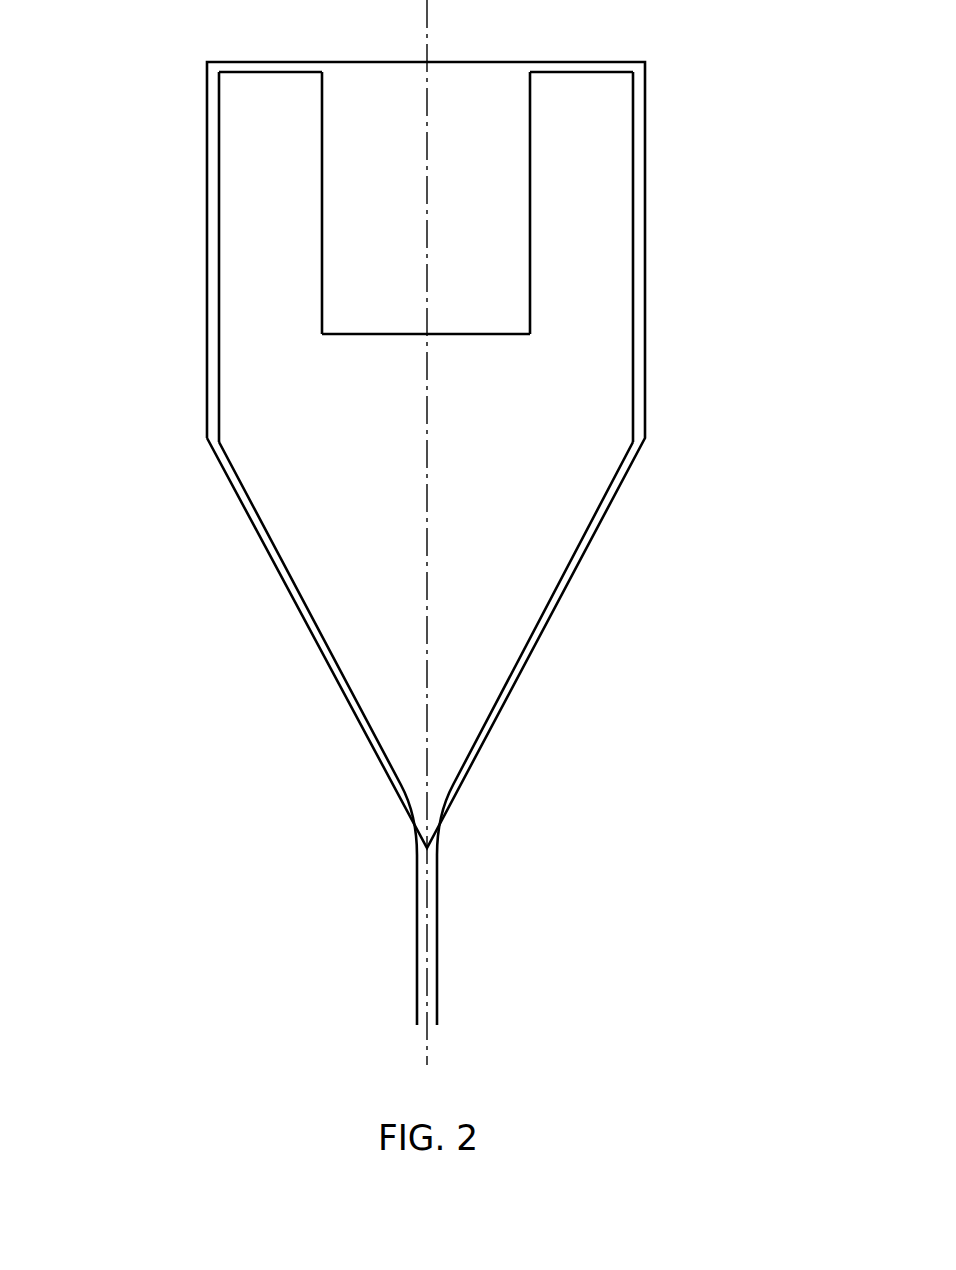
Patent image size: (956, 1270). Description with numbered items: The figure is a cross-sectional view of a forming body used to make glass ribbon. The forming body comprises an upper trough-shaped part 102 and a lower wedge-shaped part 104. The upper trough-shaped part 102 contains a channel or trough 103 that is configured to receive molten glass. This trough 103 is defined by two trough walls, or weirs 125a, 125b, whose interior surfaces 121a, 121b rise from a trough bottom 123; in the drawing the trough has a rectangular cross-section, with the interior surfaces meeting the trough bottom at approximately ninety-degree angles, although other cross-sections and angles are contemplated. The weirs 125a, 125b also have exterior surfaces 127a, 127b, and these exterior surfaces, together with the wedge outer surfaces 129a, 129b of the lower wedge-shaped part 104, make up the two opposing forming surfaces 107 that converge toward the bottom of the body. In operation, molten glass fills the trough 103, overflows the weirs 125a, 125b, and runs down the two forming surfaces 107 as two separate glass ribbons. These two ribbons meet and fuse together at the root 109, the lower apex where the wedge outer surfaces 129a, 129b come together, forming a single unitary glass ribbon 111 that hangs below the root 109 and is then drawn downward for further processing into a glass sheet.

The upper trough-shaped part 102 is at (589, 393).
The trough 103 is at (426, 203).
The lower wedge-shaped part 104 is at (424, 532).
The forming surfaces 107 is at (168, 425).
The root 109 is at (412, 855).
The unitary glass ribbon 111 is at (440, 930).
The interior surface 121a is at (323, 282).
The interior surface 121b is at (529, 252).
The trough bottom 123 is at (438, 333).
The trough wall (weir) 125a is at (258, 73).
The trough wall (weir) 125b is at (580, 73).
The exterior surface 127a is at (218, 284).
The exterior surface 127b is at (634, 284).
The wedge outer surface 129a is at (303, 601).
The wedge outer surface 129b is at (549, 601).